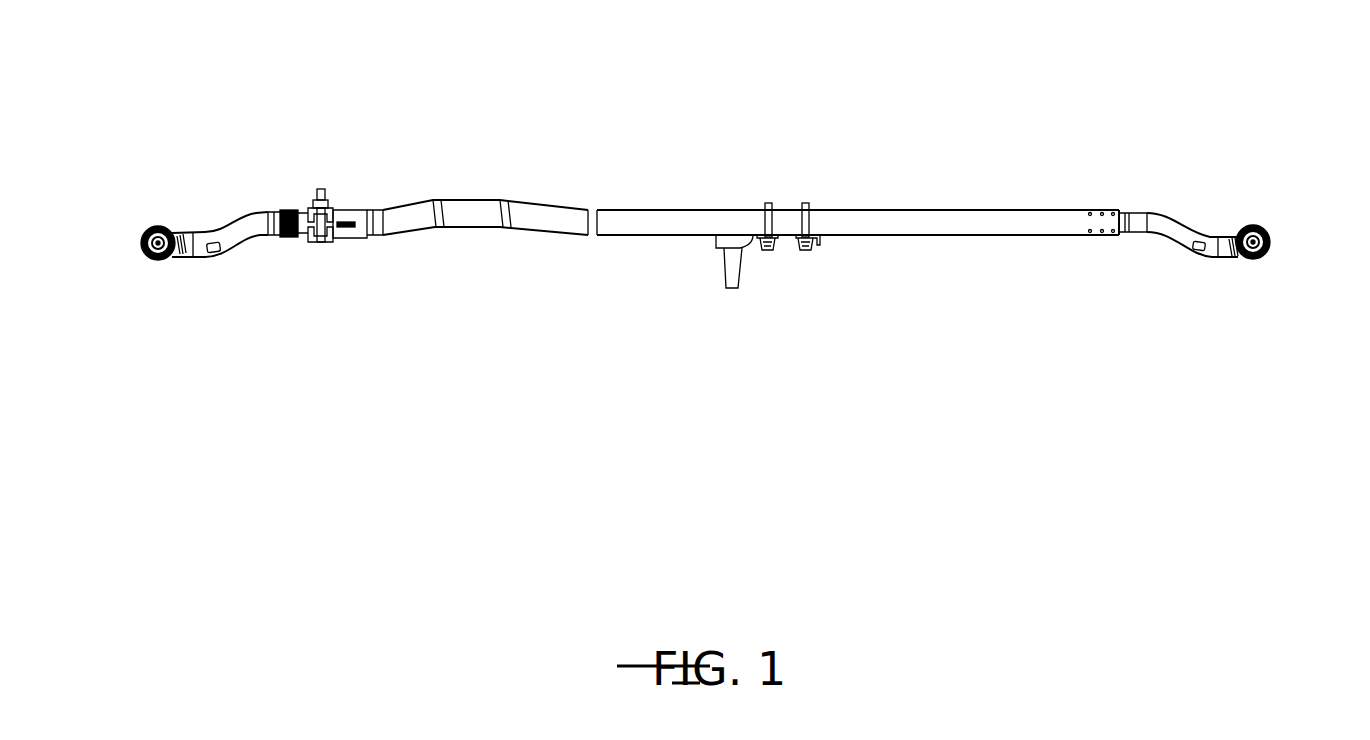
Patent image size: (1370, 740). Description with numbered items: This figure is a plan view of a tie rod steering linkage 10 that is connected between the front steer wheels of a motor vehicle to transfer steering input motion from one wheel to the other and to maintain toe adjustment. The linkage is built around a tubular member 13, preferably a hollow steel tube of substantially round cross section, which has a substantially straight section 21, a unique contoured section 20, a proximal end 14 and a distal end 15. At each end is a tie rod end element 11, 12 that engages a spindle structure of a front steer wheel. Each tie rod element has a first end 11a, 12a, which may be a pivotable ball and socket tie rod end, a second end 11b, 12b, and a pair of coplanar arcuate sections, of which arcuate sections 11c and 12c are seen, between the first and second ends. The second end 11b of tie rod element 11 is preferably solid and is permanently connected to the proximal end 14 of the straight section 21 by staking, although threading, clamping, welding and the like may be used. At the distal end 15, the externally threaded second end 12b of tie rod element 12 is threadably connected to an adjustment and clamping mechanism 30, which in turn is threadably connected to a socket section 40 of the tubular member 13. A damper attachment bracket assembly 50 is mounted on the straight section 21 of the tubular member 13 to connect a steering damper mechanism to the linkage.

The tie rod steering linkage 10 is at (1057, 108).
The tie rod end element 11 is at (1230, 205).
The first end 11a is at (1273, 245).
The second end 11b is at (1128, 233).
The arcuate section 11c is at (1210, 258).
The tie rod end element 12 is at (183, 215).
The first end 12a is at (147, 252).
The second end 12b is at (273, 238).
The arcuate section 12c is at (213, 258).
The tubular member 13 is at (898, 247).
The proximal end 14 is at (1103, 248).
The distal end 15 is at (372, 173).
The contoured section 20 is at (595, 198).
The substantially straight section 21 is at (668, 208).
The adjustment and clamping mechanism 30 is at (362, 202).
The socket section 40 is at (370, 240).
The damper attachment bracket assembly 50 is at (775, 267).